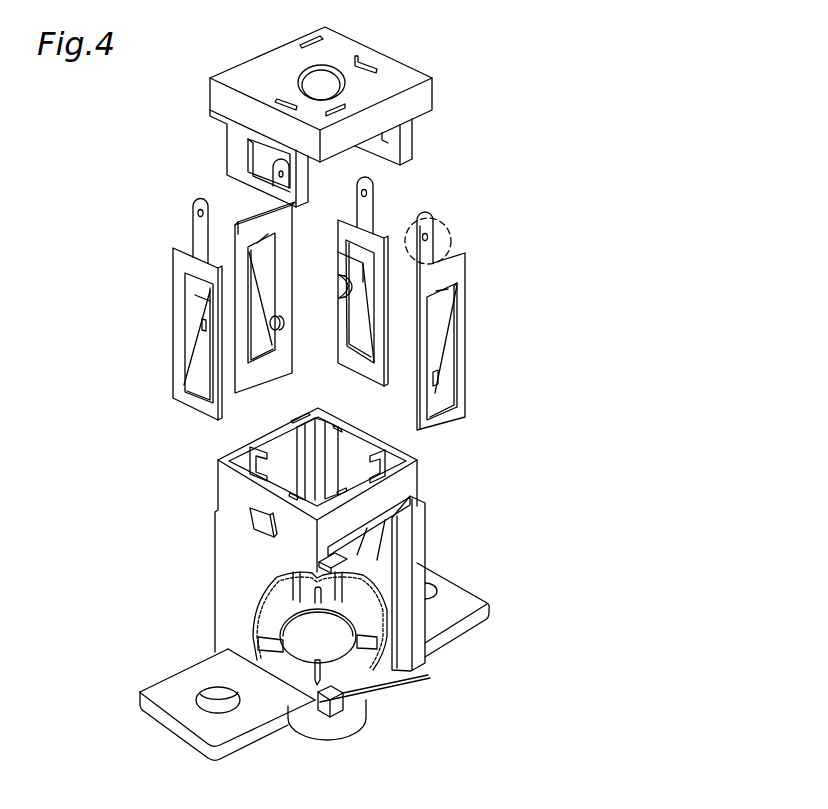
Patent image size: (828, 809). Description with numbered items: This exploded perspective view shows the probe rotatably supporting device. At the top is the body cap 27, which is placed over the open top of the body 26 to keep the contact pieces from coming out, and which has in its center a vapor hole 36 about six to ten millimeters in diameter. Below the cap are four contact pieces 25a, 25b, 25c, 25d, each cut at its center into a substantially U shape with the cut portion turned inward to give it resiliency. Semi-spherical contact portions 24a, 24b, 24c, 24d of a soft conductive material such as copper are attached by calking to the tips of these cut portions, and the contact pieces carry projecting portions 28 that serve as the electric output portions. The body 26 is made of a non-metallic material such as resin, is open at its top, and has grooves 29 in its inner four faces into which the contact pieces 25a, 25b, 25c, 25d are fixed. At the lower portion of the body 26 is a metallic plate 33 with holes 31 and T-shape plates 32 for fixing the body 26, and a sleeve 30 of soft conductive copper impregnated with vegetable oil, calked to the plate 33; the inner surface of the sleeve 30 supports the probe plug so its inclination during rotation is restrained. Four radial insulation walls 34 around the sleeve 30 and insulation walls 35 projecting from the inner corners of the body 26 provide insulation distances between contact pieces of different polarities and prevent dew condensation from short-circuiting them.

The contact portion 24a is at (352, 275).
The contact portion 24b is at (202, 323).
The contact portion 24c is at (282, 338).
The contact portion 24d is at (437, 377).
The contact piece 25a is at (375, 200).
The contact piece 25b is at (197, 377).
The contact piece 25c is at (260, 225).
The contact piece 25d is at (440, 330).
The body 26 is at (425, 522).
The body cap 27 is at (467, 78).
The projecting portion 28 is at (448, 233).
The grooves 29 is at (333, 427).
The sleeve 30 is at (350, 697).
The holes 31 is at (202, 692).
The T-shape plate 32 is at (383, 548).
The metallic plate 33 is at (163, 720).
The radial insulation wall 34 is at (318, 683).
The insulation wall 35 is at (313, 443).
The vapor hole 36 is at (331, 73).